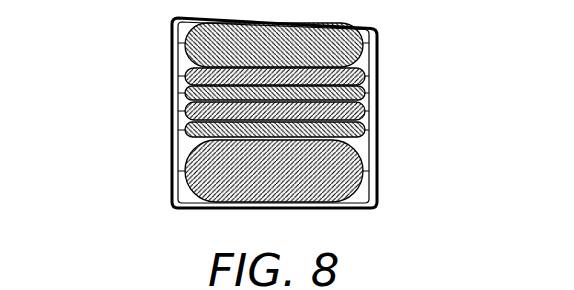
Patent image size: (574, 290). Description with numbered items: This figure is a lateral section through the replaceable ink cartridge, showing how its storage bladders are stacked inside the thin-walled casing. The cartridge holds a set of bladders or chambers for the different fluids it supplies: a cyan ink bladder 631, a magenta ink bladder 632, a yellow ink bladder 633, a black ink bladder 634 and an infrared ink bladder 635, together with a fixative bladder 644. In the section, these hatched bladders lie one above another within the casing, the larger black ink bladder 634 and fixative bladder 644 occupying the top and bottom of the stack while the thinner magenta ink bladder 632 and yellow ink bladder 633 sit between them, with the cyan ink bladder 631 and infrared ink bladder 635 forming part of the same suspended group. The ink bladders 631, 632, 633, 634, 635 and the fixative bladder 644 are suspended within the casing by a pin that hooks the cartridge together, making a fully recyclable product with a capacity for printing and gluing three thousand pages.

The cyan ink bladder 631 is at (183, 153).
The magenta ink bladder 632 is at (380, 100).
The yellow ink bladder 633 is at (183, 88).
The black ink bladder 634 is at (183, 60).
The infrared ink bladder 635 is at (378, 43).
The fixative bladder 644 is at (378, 168).